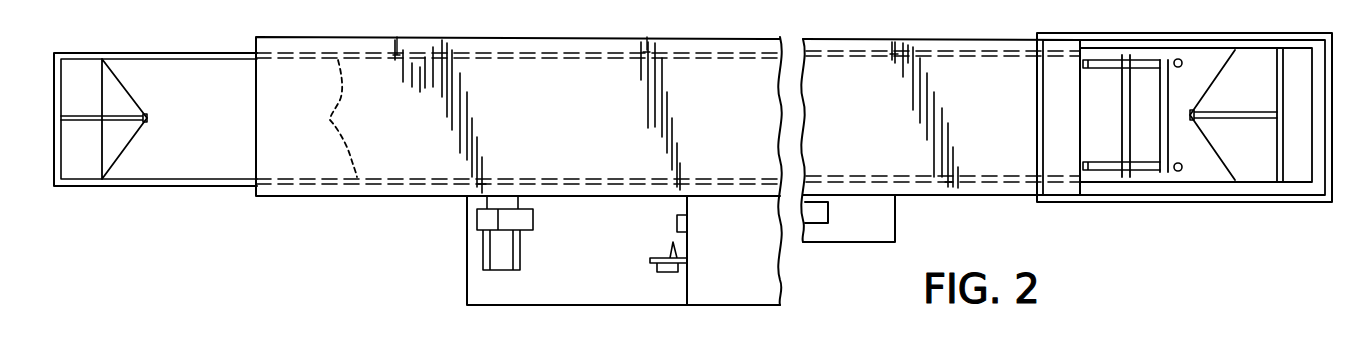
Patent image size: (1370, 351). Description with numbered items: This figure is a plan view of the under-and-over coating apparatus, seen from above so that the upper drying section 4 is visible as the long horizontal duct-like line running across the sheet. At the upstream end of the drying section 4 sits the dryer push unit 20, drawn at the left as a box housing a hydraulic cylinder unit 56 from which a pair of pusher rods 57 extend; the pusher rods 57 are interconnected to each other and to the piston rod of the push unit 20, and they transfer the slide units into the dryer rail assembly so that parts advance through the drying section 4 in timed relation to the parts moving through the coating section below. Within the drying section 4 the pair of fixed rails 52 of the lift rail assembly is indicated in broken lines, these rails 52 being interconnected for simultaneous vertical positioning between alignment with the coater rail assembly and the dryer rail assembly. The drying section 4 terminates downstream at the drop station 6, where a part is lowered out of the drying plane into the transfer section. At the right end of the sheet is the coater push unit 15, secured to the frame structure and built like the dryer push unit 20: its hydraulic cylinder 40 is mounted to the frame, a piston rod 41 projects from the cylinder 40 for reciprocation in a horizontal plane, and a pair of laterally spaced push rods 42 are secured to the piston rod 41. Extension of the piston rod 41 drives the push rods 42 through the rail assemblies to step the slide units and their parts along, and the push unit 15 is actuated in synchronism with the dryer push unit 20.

The drying section 4 is at (613, 62).
The drop station 6 is at (1032, 123).
The coater push unit 15 is at (1215, 183).
The dryer push unit 20 is at (175, 167).
The hydraulic cylinder 40 is at (1249, 110).
The piston rod 41 is at (1192, 115).
The push rods 42 is at (1140, 178).
The fixed rails 52 is at (327, 118).
The hydraulic cylinder unit 56 is at (111, 125).
The pusher rods 57 is at (235, 60).